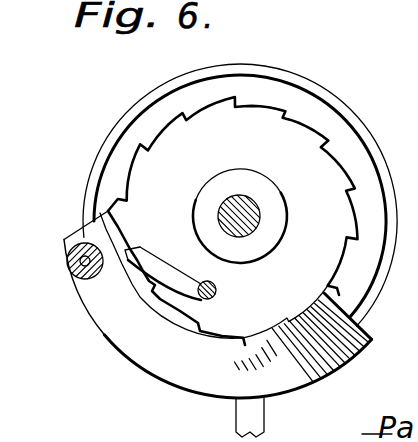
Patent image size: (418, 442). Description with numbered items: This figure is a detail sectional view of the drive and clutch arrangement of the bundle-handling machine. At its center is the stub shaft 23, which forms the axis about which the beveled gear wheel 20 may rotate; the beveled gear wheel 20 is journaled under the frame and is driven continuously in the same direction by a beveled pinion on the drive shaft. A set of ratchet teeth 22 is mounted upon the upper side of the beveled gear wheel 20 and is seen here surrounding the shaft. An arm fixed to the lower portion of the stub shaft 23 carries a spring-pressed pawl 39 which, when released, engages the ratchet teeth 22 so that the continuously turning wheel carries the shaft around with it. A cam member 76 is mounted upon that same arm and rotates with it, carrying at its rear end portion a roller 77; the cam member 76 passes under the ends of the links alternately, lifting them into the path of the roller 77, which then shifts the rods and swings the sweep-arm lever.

The beveled gear wheel 20 is at (158, 168).
The ratchet teeth 22 is at (138, 147).
The stub shaft 23 is at (228, 212).
The spring-pressed pawl 39 is at (172, 245).
The cam member 76 is at (90, 302).
The roller 77 is at (67, 261).